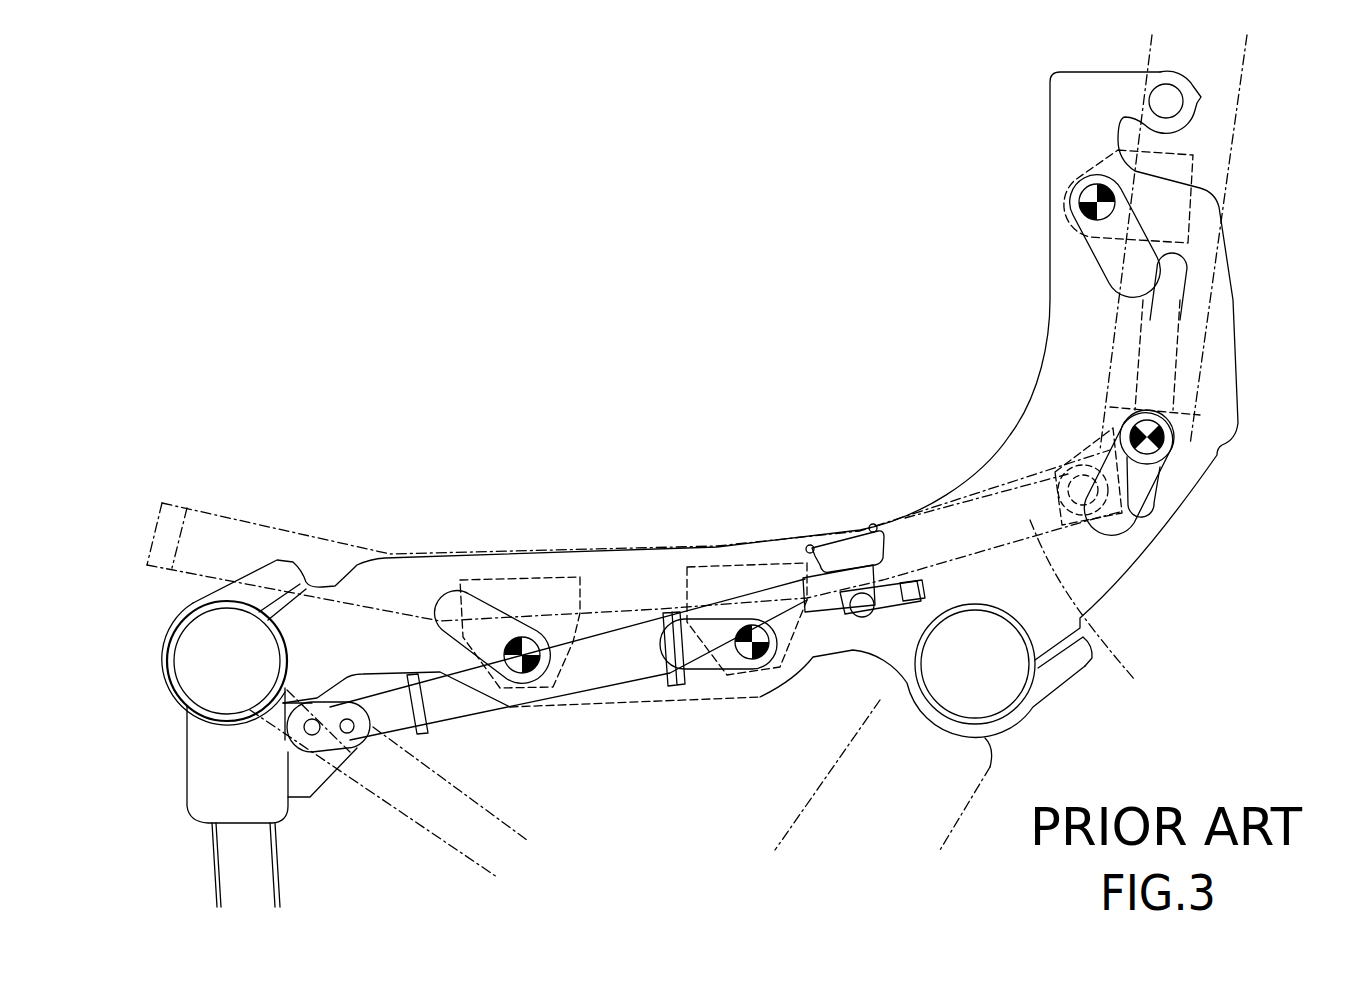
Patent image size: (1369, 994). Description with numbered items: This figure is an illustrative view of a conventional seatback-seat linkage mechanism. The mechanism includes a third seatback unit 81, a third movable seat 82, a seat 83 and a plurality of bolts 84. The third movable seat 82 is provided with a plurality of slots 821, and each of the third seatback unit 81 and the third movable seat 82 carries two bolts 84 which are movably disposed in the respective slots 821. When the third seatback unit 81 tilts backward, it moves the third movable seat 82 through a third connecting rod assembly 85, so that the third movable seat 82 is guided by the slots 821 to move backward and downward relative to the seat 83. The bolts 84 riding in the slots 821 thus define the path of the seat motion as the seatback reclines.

The third seatback unit 81 is at (1217, 88).
The third movable seat 82 is at (236, 537).
The seat 83 is at (1048, 427).
The bolts 84 is at (1077, 217).
The slots 821 is at (1121, 278).
The third connecting rod assembly 85 is at (1102, 620).